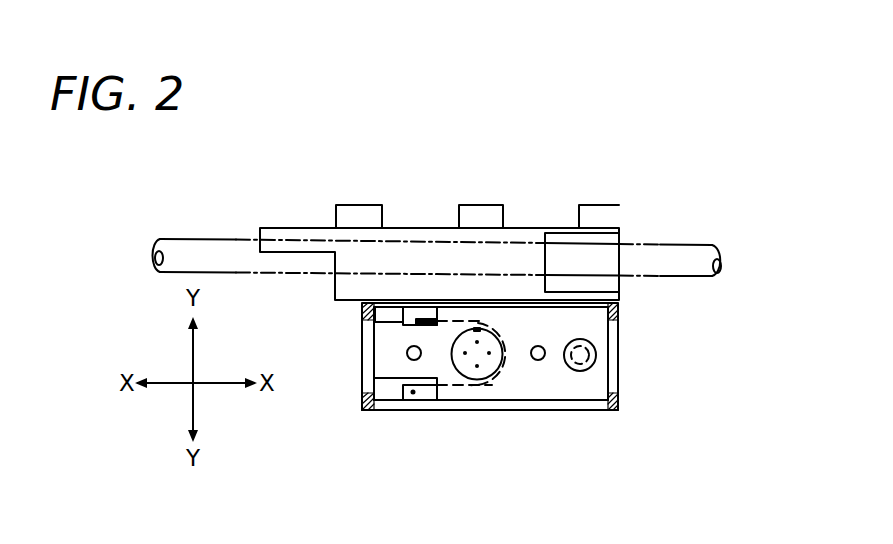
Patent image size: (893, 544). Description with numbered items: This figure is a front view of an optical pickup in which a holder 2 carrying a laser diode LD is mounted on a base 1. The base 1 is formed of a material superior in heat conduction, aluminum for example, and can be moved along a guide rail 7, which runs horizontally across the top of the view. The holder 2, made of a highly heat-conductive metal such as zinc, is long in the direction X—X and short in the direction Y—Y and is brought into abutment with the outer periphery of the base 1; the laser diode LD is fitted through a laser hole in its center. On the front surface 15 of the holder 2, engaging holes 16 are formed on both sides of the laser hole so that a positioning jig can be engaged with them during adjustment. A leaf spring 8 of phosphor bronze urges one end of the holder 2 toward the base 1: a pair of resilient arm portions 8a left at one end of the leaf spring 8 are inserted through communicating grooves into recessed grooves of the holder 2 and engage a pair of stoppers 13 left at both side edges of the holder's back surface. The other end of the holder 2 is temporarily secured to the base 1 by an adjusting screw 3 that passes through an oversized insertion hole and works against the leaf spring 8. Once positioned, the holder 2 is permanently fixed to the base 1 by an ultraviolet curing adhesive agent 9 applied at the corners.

The base 1 is at (510, 410).
The holder 2 is at (582, 402).
The adjusting screw 3 is at (597, 355).
The guide rail 7 is at (676, 250).
The leaf spring 8 is at (478, 385).
The resilient arm portions 8a is at (433, 316).
The ultraviolet curing adhesive agent 9 is at (362, 307).
The stoppers 13 is at (390, 315).
The front surface 15 is at (548, 410).
The engaging holes 16 is at (538, 346).
The laser diode LD is at (499, 338).